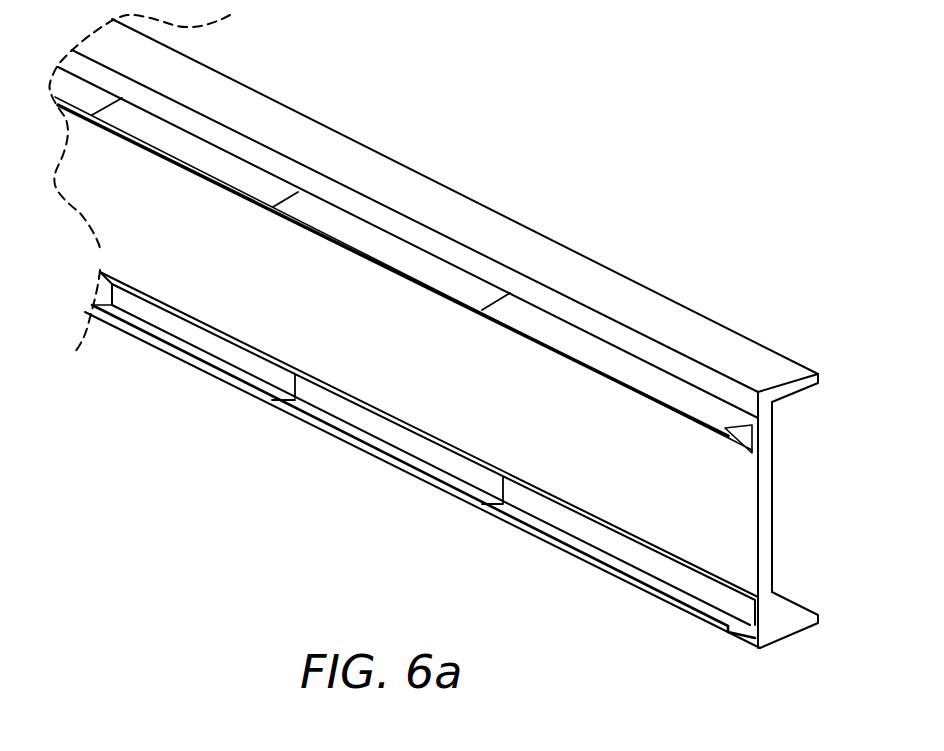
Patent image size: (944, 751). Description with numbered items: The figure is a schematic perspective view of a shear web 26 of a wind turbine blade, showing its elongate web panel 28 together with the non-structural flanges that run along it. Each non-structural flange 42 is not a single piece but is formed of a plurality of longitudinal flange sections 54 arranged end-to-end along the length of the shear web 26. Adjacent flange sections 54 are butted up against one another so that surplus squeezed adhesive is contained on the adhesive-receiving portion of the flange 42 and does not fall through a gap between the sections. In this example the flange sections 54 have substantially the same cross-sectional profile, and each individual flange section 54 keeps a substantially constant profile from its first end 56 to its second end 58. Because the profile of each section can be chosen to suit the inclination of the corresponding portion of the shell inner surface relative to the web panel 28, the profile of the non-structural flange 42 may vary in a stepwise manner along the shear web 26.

The shear web 26 is at (625, 233).
The web panel 28 is at (772, 549).
The non-structural flange 42 is at (484, 341).
The longitudinal flange section 54 is at (182, 183).
The first end 56 is at (492, 297).
The second end 58 is at (300, 200).